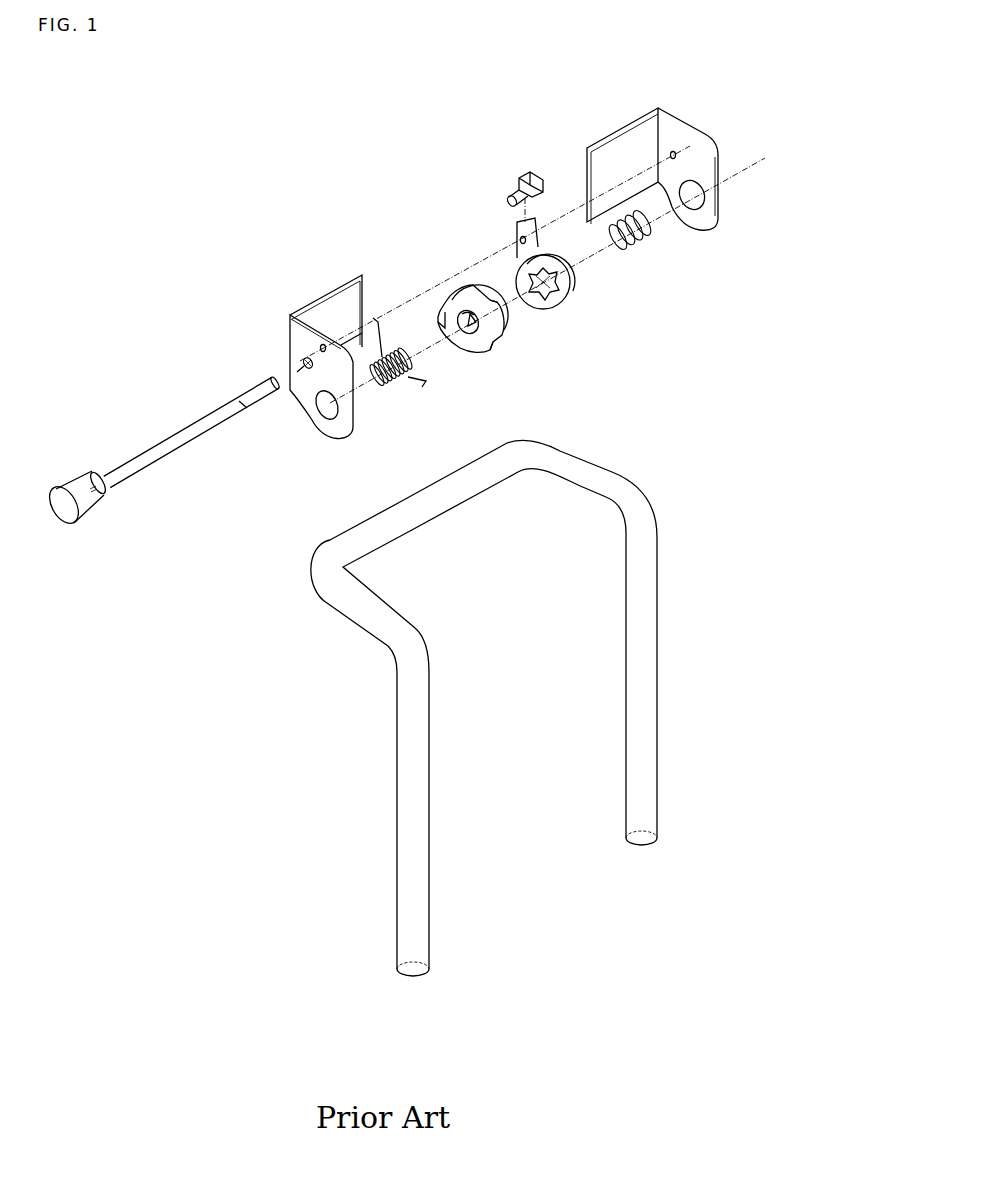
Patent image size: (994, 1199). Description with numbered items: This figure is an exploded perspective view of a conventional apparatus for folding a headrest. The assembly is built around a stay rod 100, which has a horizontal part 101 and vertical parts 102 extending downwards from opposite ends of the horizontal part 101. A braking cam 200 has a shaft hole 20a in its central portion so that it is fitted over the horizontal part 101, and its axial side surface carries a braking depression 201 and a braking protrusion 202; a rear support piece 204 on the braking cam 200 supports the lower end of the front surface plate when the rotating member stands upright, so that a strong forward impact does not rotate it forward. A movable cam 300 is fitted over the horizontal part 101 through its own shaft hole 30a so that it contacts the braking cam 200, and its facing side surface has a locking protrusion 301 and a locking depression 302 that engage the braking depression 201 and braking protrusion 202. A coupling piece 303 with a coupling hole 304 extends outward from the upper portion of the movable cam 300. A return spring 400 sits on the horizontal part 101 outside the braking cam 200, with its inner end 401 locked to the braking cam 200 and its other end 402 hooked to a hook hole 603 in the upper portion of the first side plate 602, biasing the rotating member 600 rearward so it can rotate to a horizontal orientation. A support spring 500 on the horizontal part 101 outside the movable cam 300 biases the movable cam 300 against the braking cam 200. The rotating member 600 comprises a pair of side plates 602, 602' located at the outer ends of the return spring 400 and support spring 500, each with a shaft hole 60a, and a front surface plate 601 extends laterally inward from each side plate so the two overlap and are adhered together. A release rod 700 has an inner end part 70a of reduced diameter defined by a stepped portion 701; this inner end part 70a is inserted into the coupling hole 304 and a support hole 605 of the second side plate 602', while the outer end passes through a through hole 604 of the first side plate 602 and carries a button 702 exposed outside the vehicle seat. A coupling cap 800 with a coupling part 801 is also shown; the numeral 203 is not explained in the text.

The stay rod 100 is at (476, 708).
The horizontal part 101 is at (432, 505).
The vertical parts 102 is at (632, 666).
The braking cam 200 is at (465, 326).
The braking depression 201 is at (502, 350).
The braking protrusion 202 is at (498, 342).
The rotor protrusion 203 is at (480, 352).
The rear support piece 204 is at (442, 338).
The shaft hole 20a is at (462, 345).
The movable cam 300 is at (554, 260).
The locking protrusion 301 is at (568, 300).
The locking depression 302 is at (570, 280).
The coupling piece 303 is at (532, 218).
The coupling hole 304 is at (518, 238).
The shaft hole 30a is at (522, 292).
The return spring 400 is at (376, 351).
The inner end 401 is at (425, 390).
The spring second end 402 is at (383, 335).
The support spring 500 is at (647, 245).
The rotating member 600 is at (281, 354).
The front surface plate 601 is at (330, 297).
The first side plate 602 is at (281, 356).
The second side plate 602' is at (685, 162).
The hook hole 603 is at (319, 349).
The through hole 604 is at (300, 368).
The support hole 605 is at (674, 151).
The shaft hole 60a is at (315, 415).
The release rod 700 is at (162, 447).
The stepped portion 701 is at (250, 418).
The button 702 is at (63, 484).
The inner end part 70a is at (247, 395).
The coupling cap 800 is at (508, 148).
The coupling part 801 is at (531, 172).